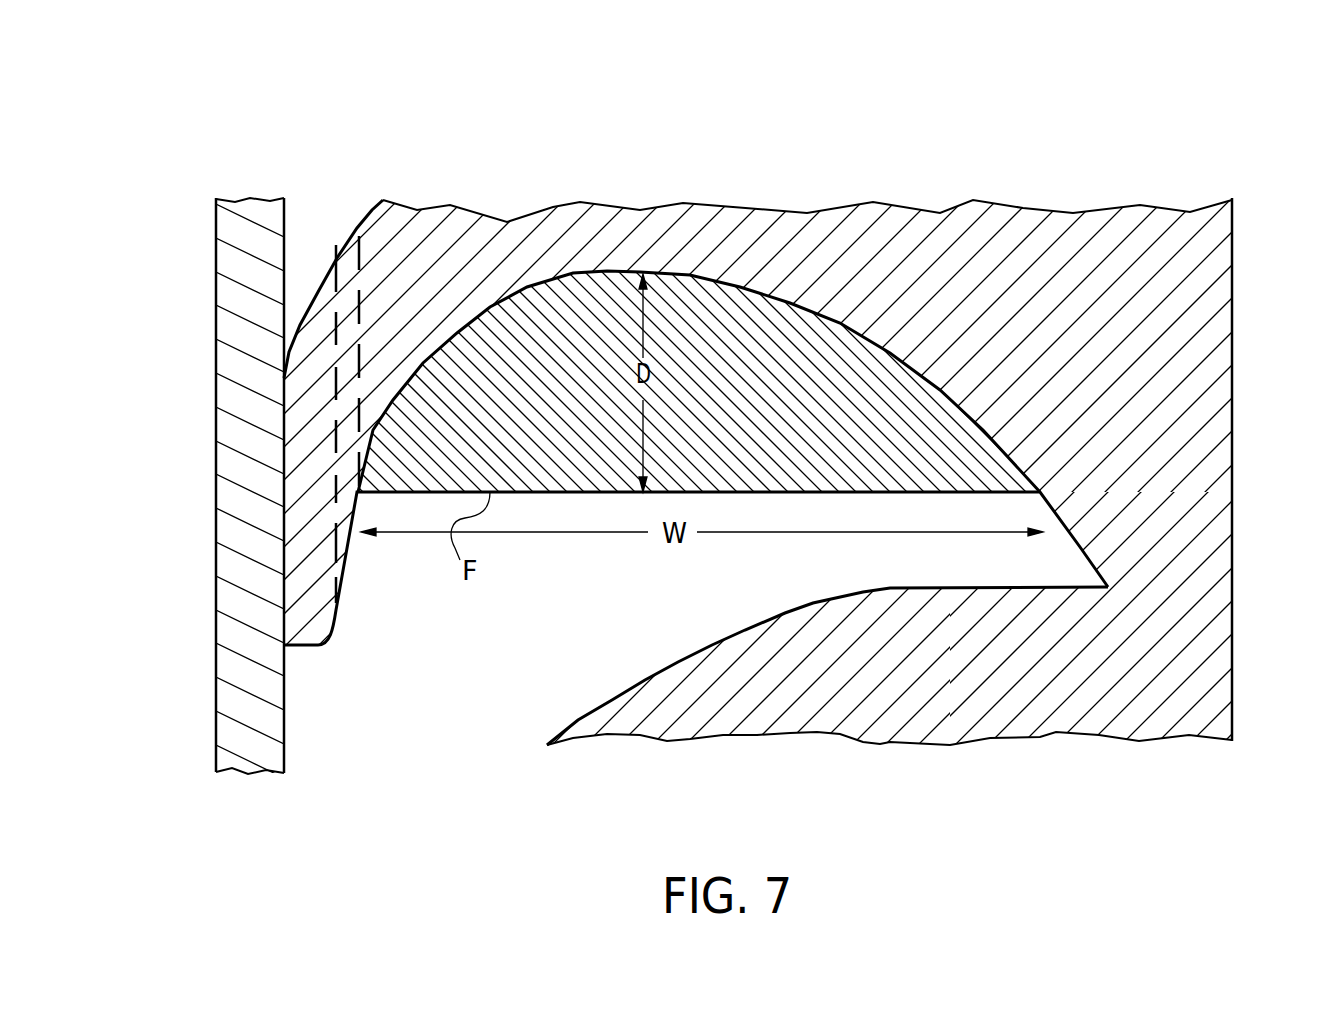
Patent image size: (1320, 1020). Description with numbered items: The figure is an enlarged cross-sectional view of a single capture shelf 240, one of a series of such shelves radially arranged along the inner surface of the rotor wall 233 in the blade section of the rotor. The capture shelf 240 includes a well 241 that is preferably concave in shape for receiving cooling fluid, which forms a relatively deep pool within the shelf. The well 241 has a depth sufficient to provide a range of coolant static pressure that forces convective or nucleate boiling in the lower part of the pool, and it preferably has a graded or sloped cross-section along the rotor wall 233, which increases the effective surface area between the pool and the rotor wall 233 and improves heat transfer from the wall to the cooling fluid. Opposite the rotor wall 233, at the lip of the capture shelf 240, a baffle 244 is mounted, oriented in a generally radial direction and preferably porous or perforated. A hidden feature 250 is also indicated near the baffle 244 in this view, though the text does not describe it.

The capture shelf 240 is at (957, 140).
The well 241 is at (870, 377).
The rotor wall 233 is at (1234, 338).
The baffle 244 is at (217, 690).
The hidden channel / parting line 250 is at (322, 428).